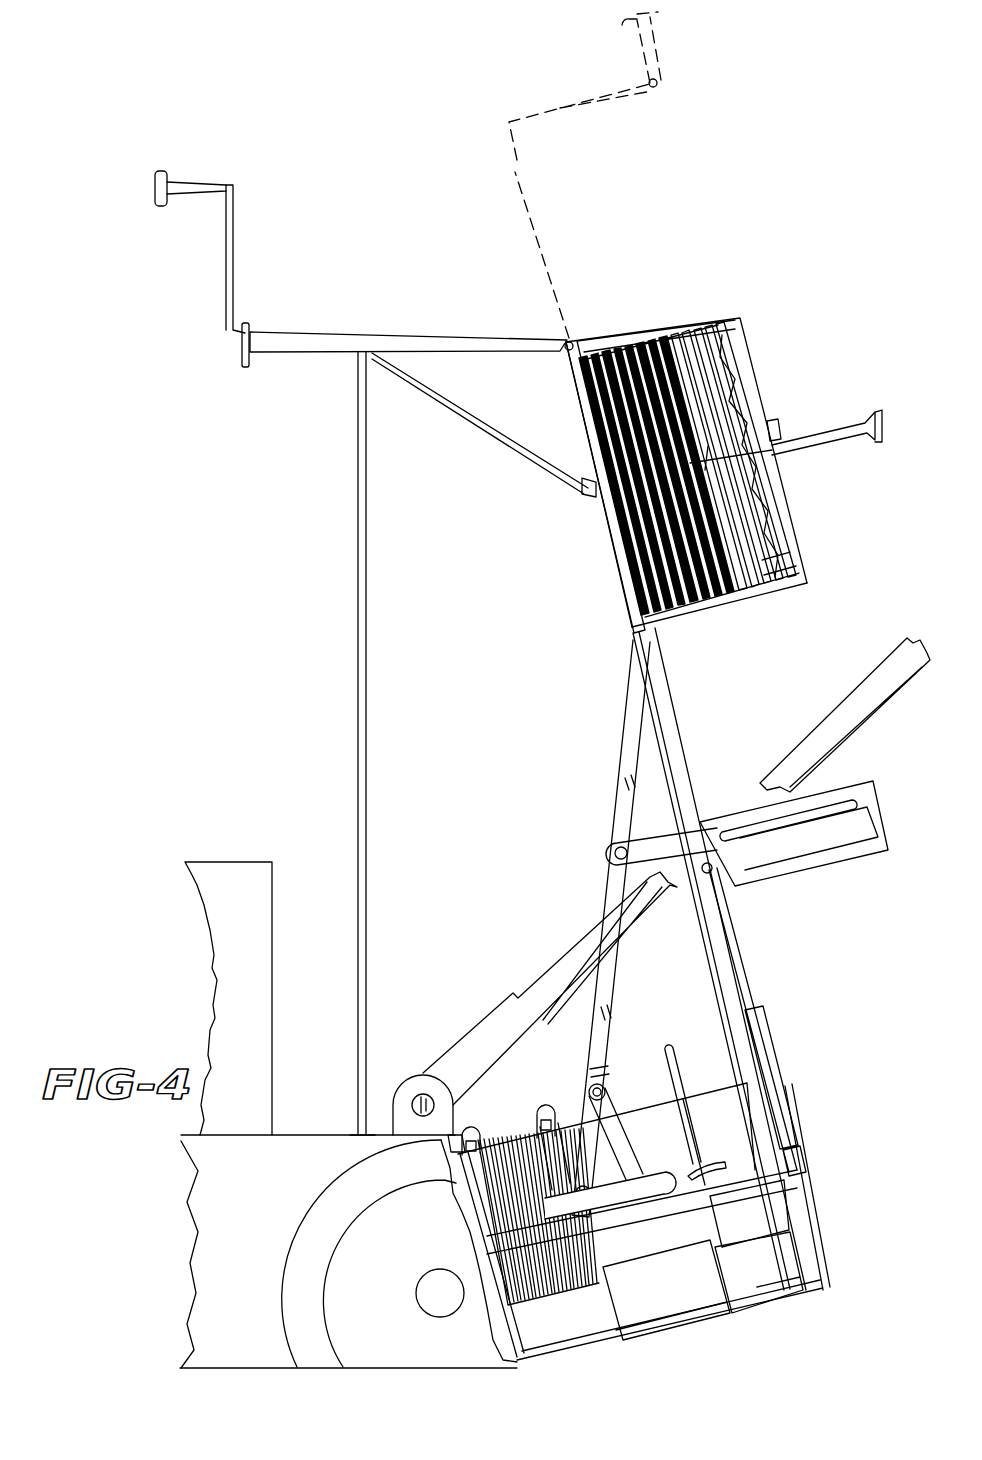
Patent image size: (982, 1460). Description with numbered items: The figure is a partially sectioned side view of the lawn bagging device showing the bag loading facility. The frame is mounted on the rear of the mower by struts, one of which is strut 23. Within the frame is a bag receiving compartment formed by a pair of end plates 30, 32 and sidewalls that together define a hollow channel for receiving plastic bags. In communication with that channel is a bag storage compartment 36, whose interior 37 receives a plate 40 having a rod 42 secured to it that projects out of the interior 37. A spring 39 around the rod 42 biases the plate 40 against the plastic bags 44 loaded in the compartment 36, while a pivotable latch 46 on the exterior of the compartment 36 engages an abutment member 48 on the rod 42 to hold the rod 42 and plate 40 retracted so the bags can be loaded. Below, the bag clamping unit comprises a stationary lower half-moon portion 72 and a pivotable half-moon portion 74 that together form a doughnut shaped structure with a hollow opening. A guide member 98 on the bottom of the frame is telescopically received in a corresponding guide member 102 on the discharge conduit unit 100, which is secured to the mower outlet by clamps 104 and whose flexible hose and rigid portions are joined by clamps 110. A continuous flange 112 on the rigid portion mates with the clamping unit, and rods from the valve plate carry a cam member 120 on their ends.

The strut 23 is at (647, 1214).
The end plate 30 is at (677, 747).
The end plate 32 is at (637, 653).
The bag storage compartment 36 is at (740, 330).
The interior 37 is at (675, 620).
The spring 39 is at (758, 598).
The plate 40 is at (665, 342).
The rod 42 is at (820, 440).
The plastic bags 44 is at (640, 521).
The pivotable latch 46 is at (781, 424).
The abutment member 48 is at (730, 455).
The stationary lower half-moon portion 72 is at (790, 1210).
The pivotable half-moon portion 74 is at (747, 1043).
The guide member 98 is at (760, 1277).
The discharge conduit unit 100 is at (552, 1092).
The guide member 102 is at (640, 1310).
The clamps 104 is at (513, 1290).
The clamps 110 is at (545, 1150).
The continuous flange 112 is at (663, 1057).
The cam member 120 is at (713, 1165).